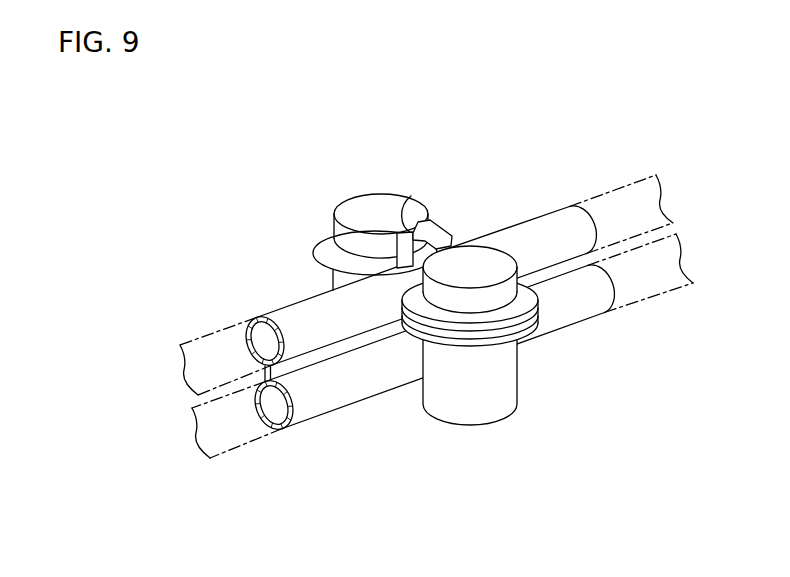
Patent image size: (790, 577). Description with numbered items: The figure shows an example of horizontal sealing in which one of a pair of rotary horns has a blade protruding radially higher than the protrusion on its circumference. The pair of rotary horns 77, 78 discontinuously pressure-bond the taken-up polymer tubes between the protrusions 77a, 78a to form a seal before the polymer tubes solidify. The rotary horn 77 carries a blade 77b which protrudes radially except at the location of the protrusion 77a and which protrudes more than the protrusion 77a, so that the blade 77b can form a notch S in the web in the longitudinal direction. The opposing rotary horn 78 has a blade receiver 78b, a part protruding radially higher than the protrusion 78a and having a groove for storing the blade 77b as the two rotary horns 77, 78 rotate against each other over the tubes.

The rotary horn 77 is at (348, 200).
The protrusion 77a is at (413, 230).
The blade 77b is at (324, 250).
The rotary horn 78 is at (521, 298).
The protrusion 78a is at (450, 246).
The blade receiver 78b is at (537, 317).
The notch S is at (562, 268).